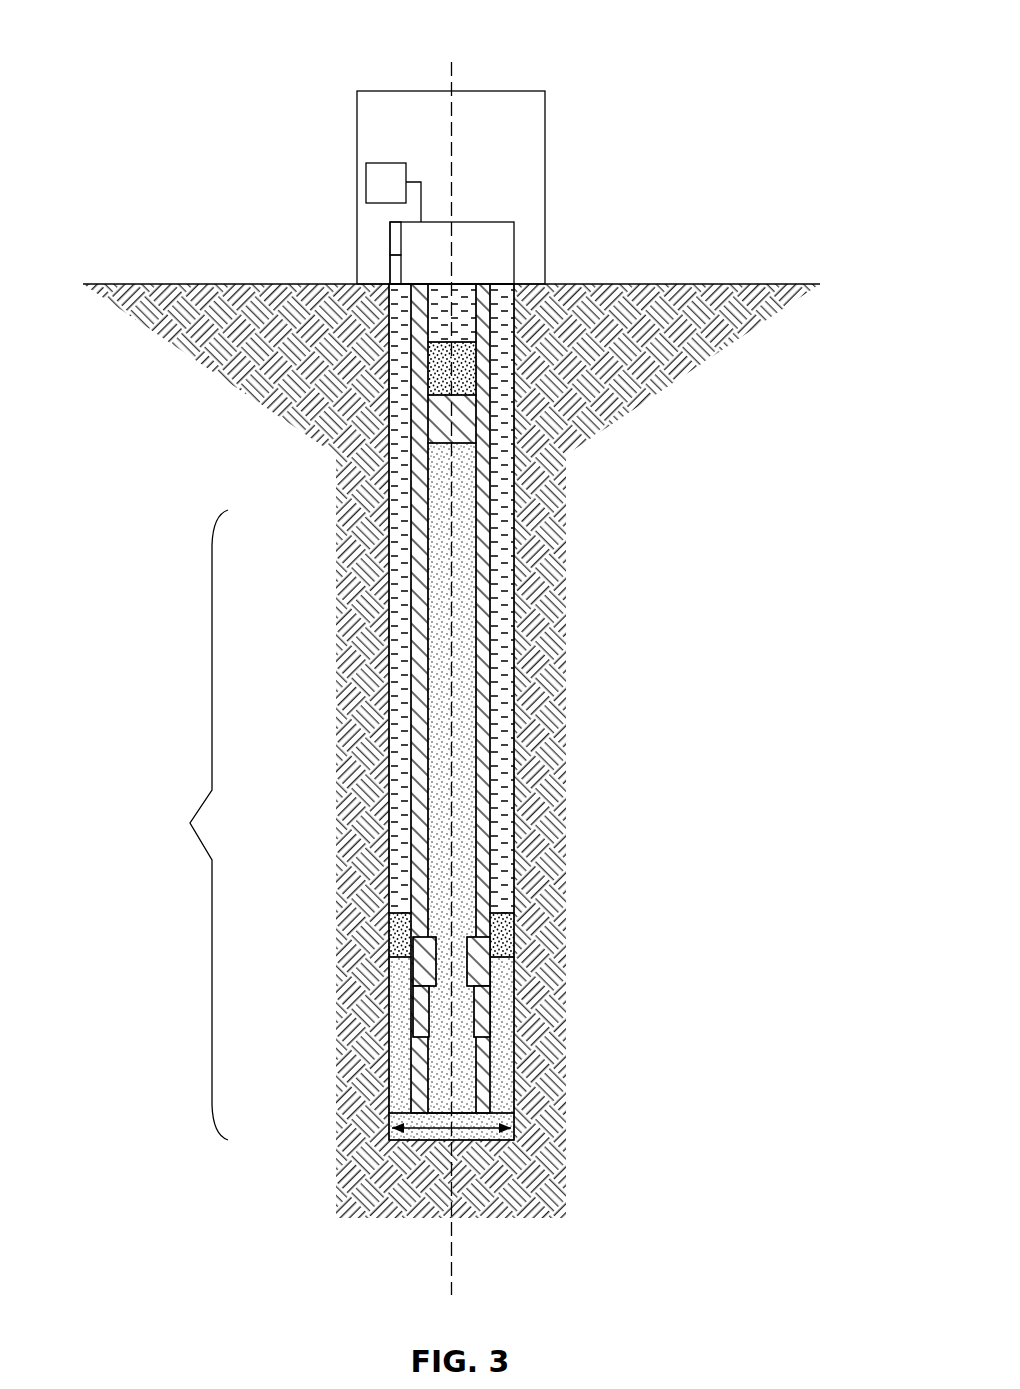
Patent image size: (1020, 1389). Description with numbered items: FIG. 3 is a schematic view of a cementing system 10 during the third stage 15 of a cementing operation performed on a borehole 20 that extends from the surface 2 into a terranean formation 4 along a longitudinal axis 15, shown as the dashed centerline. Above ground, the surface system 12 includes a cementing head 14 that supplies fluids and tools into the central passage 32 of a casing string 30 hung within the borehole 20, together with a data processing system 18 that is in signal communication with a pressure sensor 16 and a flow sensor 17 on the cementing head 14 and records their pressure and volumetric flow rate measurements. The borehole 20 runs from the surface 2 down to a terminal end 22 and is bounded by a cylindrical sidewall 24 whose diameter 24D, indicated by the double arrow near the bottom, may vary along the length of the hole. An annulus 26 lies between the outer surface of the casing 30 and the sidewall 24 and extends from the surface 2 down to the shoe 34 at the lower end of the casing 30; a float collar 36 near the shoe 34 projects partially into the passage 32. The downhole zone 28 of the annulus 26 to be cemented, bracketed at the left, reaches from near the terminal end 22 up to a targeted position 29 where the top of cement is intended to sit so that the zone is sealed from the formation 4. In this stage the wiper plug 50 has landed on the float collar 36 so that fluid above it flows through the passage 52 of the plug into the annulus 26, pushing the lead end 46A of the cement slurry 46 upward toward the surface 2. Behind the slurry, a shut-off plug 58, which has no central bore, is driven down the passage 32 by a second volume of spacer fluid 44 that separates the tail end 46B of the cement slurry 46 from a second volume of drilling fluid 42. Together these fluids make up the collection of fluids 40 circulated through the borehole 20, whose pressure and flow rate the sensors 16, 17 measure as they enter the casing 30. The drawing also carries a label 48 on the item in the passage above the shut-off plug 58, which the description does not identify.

The cementing system 10 is at (198, 36).
The longitudinal axis 15 is at (456, 80).
The surface system 12 is at (540, 135).
The cementing head 14 is at (500, 268).
The data processing system 18 is at (375, 185).
The pressure sensor 16 is at (395, 232).
The flow sensor 17 is at (395, 268).
The surface 2 is at (720, 284).
The terranean formation 4 is at (655, 350).
The drilling fluid 42 is at (470, 330).
The borehole 20 is at (390, 490).
The plug 48 is at (470, 355).
The shut-off plug 58 is at (470, 410).
The tail end of cement slurry 46B is at (480, 447).
The central passage 32 is at (462, 490).
The annulus 26 is at (513, 565).
The sidewall 24 is at (513, 637).
The cement slurry 46 is at (488, 740).
The casing string 30 is at (545, 800).
The targeted position 29 is at (215, 522).
The downhole zone 28 is at (190, 825).
The collection of fluids 40 is at (316, 576).
The passage of wiper plug 52 is at (392, 920).
The spacer fluid 44 is at (513, 957).
The lead end of cement slurry 46A is at (490, 980).
The wiper plug 50 is at (513, 1000).
The float collar 36 is at (423, 1015).
The shoe 34 is at (513, 1120).
The diameter 24D is at (415, 1140).
The terminal end 22 is at (440, 1150).